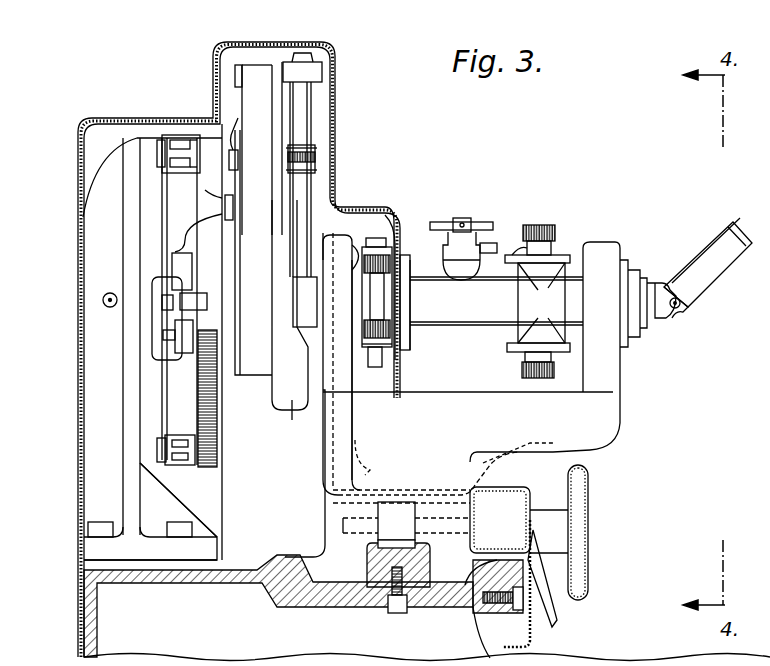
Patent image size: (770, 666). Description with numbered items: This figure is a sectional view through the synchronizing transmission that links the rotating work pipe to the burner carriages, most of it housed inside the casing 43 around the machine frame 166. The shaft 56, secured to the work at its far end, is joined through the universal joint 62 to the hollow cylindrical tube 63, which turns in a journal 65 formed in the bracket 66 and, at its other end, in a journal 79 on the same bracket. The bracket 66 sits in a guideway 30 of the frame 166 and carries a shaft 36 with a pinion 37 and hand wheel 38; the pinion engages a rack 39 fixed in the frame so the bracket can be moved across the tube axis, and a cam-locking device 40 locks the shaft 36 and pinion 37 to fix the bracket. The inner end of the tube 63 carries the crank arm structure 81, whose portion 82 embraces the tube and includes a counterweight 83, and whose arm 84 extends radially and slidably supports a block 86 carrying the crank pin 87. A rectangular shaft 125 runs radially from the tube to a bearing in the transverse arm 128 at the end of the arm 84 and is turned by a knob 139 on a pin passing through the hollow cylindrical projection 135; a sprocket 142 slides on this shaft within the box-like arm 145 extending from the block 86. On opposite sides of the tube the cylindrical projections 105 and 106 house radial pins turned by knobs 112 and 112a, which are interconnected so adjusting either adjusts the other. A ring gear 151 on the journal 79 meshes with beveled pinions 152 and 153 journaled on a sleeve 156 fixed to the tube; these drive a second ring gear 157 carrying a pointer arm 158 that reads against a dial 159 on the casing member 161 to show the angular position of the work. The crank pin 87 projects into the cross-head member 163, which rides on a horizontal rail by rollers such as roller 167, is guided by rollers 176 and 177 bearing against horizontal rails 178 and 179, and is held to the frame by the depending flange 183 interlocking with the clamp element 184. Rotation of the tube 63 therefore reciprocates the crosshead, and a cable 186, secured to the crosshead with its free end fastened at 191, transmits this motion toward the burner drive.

The guideway 30 is at (462, 590).
The shaft 36 is at (492, 512).
The pinion 37 is at (406, 500).
The hand wheel 38 is at (590, 478).
The rack 39 is at (388, 585).
The cam-locking device 40 is at (560, 610).
The casing 43 is at (78, 406).
The shaft 56 is at (725, 240).
The universal joint 62 is at (683, 318).
The hollow cylindrical tube 63 is at (498, 306).
The journal 65 is at (607, 250).
The bracket 66 is at (484, 421).
The journal 79 is at (340, 347).
The crank arm structure 81 is at (260, 363).
The portion 82 is at (290, 288).
The counterweight 83 is at (292, 412).
The arm 84 is at (251, 72).
The block 86 is at (236, 183).
The crank pin 87 is at (222, 214).
The cylindrical projection 105 is at (510, 258).
The cylindrical projection 106 is at (520, 333).
The knob 112 is at (544, 226).
The knob 112a is at (540, 378).
The rectangular shaft 125 is at (308, 118).
The transverse arm 128 is at (320, 72).
The hollow cylindrical projection 135 is at (450, 266).
The knob 139 is at (462, 224).
The sprocket 142 is at (315, 160).
The box-like arm 145 is at (253, 133).
The ring gear 151 is at (348, 354).
The beveled pinion 152 is at (388, 218).
The beveled pinion 153 is at (375, 367).
The sleeve 156 is at (378, 298).
The ring gear 157 is at (392, 342).
The pointer arm 158 is at (404, 228).
The dial 159 is at (410, 362).
The casing member 161 is at (222, 198).
The cross-head member 163 is at (214, 452).
The frame 166 is at (156, 583).
The roller 167 is at (178, 348).
The roller 176 is at (173, 140).
The roller 177 is at (165, 449).
The horizontal rail 178 is at (162, 140).
The horizontal rail 179 is at (143, 463).
The depending flange 183 is at (152, 283).
The clamp element 184 is at (172, 310).
The cable 186 is at (103, 300).
The cable end securement 191 is at (205, 290).